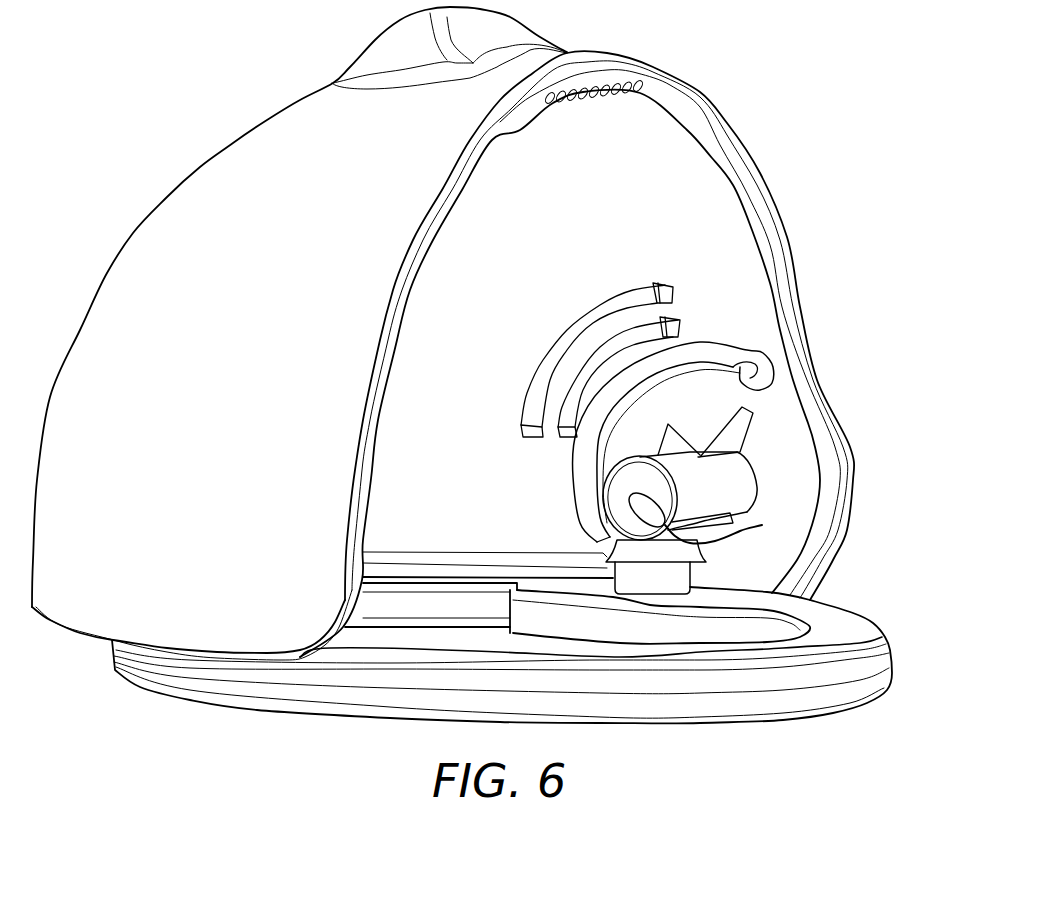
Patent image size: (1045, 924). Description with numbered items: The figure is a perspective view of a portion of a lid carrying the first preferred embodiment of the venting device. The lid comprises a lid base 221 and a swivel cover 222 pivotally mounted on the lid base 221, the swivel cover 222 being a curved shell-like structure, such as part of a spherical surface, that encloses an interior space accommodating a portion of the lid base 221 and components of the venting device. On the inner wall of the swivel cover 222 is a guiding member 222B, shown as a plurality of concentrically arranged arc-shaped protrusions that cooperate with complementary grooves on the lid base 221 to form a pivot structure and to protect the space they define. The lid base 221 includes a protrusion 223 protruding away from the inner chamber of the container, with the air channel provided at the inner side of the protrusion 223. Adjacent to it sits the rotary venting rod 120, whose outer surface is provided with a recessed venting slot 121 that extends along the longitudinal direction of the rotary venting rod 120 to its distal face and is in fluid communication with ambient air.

The swivel cover 222 is at (687, 190).
The guiding member 222B is at (740, 367).
The rotary venting rod 120 is at (752, 470).
The venting slot 121 is at (762, 525).
The protrusion 223 is at (680, 580).
The lid base 221 is at (857, 623).